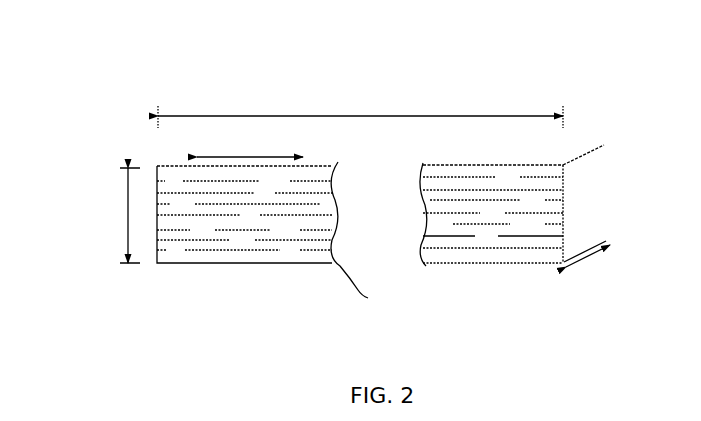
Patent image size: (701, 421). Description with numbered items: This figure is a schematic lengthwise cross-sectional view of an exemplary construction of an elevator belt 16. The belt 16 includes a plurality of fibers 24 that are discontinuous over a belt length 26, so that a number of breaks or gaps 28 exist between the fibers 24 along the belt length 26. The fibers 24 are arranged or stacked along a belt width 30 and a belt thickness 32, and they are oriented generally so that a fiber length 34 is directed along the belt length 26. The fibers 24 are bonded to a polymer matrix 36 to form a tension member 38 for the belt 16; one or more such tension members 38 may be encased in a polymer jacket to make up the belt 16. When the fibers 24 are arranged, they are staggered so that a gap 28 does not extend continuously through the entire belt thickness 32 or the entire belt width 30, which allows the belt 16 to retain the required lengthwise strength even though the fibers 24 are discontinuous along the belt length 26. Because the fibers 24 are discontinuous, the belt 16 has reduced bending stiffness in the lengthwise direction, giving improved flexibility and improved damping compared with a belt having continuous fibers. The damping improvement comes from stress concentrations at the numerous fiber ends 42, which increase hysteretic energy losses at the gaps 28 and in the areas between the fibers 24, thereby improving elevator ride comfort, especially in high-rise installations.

The belt 16 is at (108, 103).
The fibers 24 is at (180, 240).
The belt length 26 is at (343, 115).
The gaps 28 is at (530, 225).
The belt width 30 is at (592, 258).
The belt thickness 32 is at (128, 232).
The fiber length 34 is at (250, 144).
The polymer matrix 36 is at (360, 234).
The tension member 38 is at (285, 298).
The fiber ends 42 is at (508, 172).